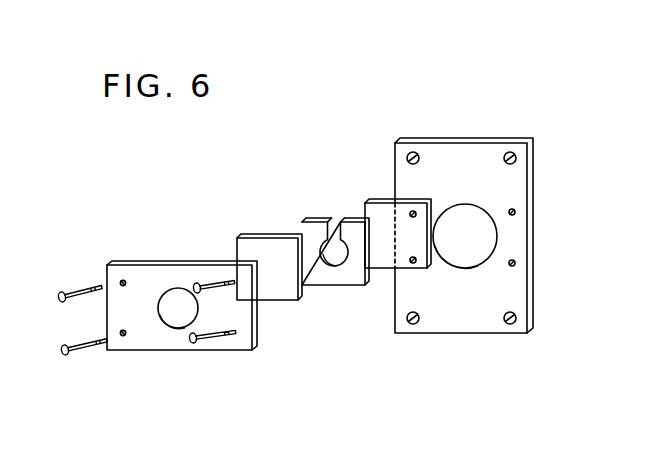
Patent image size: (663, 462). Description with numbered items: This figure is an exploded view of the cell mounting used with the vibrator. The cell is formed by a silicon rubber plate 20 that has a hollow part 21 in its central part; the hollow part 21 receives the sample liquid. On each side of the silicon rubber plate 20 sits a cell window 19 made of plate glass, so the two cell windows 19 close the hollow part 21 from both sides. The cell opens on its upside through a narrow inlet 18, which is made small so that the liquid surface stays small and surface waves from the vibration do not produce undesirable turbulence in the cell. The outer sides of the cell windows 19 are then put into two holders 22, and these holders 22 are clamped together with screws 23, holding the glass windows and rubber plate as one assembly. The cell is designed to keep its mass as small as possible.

The narrow inlet 18 is at (336, 227).
The cell windows 19 is at (266, 236).
The silicon rubber plate 20 is at (346, 281).
The hollow part 21 is at (330, 259).
The holders 22 is at (160, 264).
The screws 23 is at (203, 346).